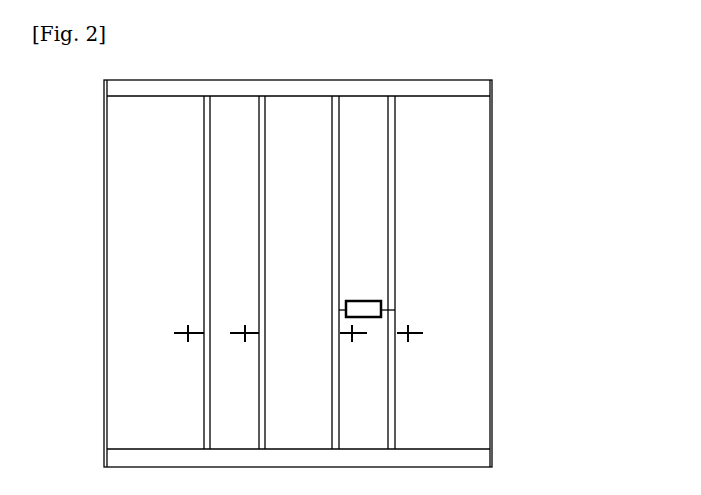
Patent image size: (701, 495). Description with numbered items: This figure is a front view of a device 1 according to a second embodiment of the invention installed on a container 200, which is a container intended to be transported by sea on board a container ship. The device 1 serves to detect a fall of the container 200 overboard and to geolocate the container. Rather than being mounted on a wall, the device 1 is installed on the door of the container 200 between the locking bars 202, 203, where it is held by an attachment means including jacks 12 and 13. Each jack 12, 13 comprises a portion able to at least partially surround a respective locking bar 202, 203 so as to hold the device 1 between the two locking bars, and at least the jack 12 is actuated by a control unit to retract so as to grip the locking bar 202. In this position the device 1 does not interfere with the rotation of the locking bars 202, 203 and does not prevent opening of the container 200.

The container 200 is at (492, 132).
The locking bar 202 is at (345, 205).
The locking bar 203 is at (396, 368).
The device 1 is at (365, 301).
The jack 13 is at (395, 310).
The jack 12 is at (342, 318).